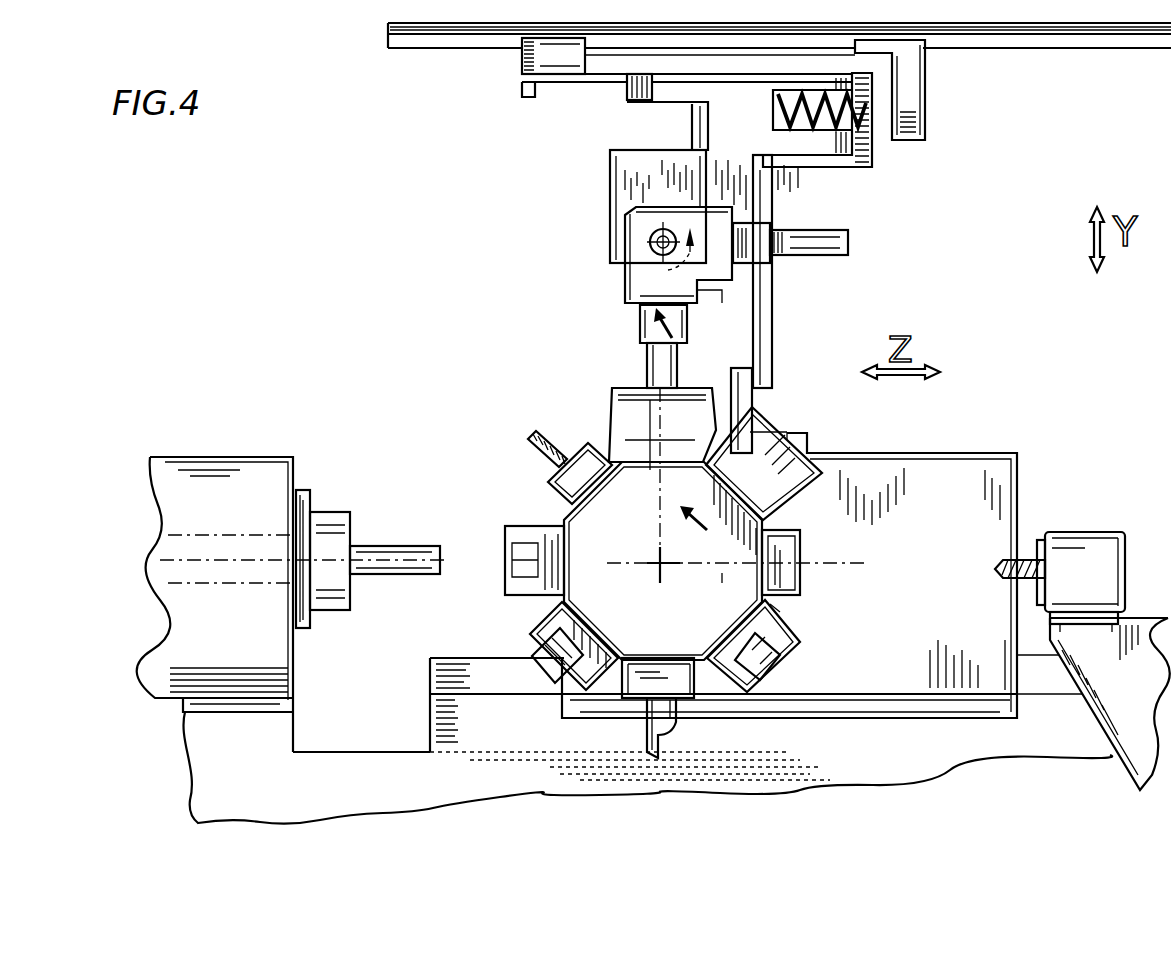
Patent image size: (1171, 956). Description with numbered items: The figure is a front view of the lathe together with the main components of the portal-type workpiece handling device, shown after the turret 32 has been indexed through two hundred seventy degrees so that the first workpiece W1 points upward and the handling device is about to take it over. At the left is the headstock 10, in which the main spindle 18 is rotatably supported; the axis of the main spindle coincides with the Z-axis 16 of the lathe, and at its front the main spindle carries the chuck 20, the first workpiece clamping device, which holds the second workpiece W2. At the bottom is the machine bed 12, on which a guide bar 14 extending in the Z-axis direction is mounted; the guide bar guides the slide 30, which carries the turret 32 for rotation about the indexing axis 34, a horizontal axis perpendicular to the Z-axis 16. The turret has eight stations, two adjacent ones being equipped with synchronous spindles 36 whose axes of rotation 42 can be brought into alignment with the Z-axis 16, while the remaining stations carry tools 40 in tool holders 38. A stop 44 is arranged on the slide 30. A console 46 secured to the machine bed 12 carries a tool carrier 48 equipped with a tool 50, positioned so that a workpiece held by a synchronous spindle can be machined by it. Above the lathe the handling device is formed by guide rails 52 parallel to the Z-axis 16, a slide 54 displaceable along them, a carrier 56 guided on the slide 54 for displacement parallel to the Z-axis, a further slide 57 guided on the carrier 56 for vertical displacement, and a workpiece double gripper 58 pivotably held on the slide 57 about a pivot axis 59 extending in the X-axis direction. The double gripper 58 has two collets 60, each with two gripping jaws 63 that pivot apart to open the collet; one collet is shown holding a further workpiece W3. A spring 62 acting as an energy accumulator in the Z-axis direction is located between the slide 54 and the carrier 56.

The headstock 10 is at (228, 457).
The machine bed 12 is at (362, 752).
The guide bar 14 is at (452, 664).
The Z-axis 16 is at (726, 575).
The main spindle 18 is at (242, 532).
The chuck 20 is at (346, 513).
The slide 30 is at (962, 440).
The turret 32 is at (785, 610).
The indexing axis 34 is at (658, 563).
The synchronous spindle 36 is at (612, 388).
The tool holder 38 is at (517, 528).
The tool 40 is at (540, 440).
The axis of rotation 42 is at (660, 475).
The stop 44 is at (742, 372).
The console 46 is at (1095, 718).
The tool carrier 48 is at (1082, 532).
The tool 50 is at (1008, 560).
The guide rails 52 is at (1088, 48).
The slide 54 is at (522, 66).
The carrier 56 is at (660, 104).
The further slide 57 is at (612, 172).
The workpiece double gripper 58 is at (605, 292).
The pivot axis 59 is at (650, 242).
The collet 60 is at (660, 306).
The spring 62 is at (875, 140).
The gripping jaws 63 is at (640, 320).
The first workpiece W1 is at (655, 365).
The second workpiece W2 is at (402, 546).
The third workpiece W3 is at (848, 242).